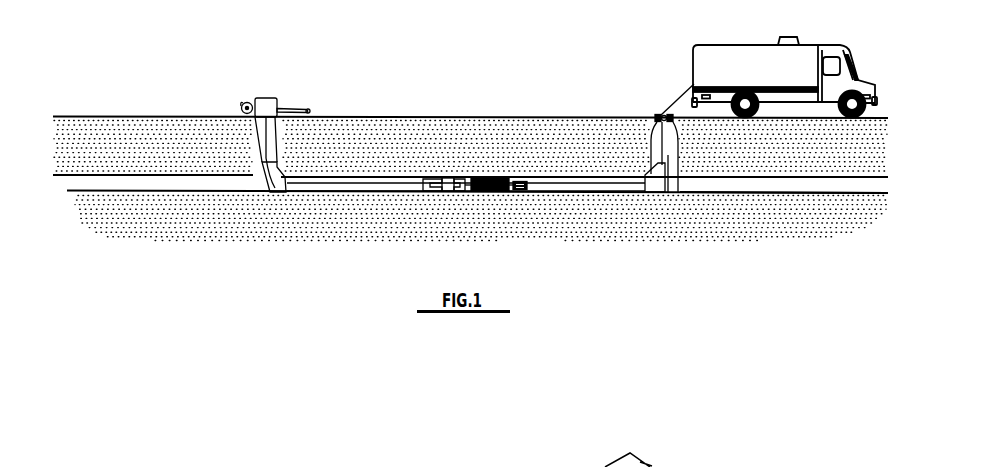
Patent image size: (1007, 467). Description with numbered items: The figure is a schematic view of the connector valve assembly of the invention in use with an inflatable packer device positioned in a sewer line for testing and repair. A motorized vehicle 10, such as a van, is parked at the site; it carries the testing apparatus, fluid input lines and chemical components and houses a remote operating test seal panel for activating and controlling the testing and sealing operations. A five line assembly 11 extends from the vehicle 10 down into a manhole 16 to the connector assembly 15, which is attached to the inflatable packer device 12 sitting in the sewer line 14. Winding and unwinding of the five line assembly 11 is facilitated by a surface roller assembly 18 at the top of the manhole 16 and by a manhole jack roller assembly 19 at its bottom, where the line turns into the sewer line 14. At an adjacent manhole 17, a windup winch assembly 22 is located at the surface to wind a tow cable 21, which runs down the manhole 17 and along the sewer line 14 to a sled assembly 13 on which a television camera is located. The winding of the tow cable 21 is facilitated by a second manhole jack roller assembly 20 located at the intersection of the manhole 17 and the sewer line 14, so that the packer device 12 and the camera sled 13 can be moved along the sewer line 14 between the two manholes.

The motorized vehicle 10 is at (703, 50).
The five line assembly 11 is at (679, 88).
The inflatable packer device 12 is at (480, 192).
The sled assembly 13 is at (437, 192).
The sewer line 14 is at (696, 193).
The connector assembly 15 is at (526, 192).
The manhole 16 is at (670, 193).
The adjacent manhole 17 is at (277, 138).
The surface roller assembly 18 is at (659, 116).
The manhole jack roller assembly 19 is at (647, 193).
The manhole jack roller assembly 20 is at (272, 185).
The tow cable 21 is at (331, 192).
The windup winch assembly 22 is at (267, 104).